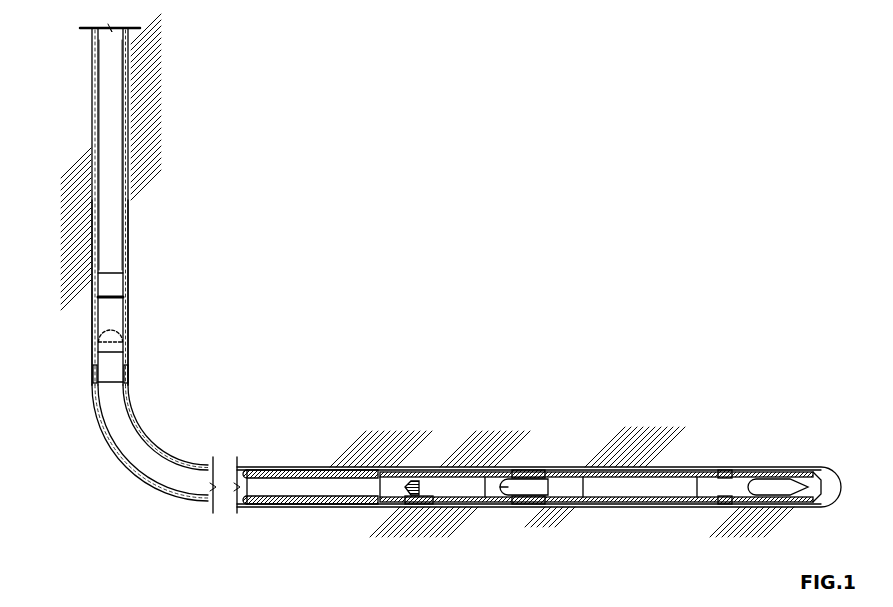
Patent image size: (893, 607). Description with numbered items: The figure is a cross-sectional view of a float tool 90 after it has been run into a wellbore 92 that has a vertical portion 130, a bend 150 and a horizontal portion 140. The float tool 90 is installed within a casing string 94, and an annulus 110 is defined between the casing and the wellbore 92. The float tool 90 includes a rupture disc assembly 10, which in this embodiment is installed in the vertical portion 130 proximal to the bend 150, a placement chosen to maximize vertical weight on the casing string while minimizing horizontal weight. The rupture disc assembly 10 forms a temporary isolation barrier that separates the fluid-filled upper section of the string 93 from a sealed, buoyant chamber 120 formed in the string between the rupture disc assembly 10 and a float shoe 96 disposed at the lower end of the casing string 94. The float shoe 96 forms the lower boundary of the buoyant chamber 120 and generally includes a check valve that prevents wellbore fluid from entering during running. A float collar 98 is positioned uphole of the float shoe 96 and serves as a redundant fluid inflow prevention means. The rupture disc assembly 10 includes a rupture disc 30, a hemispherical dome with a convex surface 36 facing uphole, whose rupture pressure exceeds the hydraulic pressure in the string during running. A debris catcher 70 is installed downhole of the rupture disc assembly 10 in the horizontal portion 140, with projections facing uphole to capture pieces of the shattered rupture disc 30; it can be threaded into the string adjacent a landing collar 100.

The rupture disc assembly 10 is at (143, 272).
The rupture disc 30 is at (99, 343).
The convex surface 36 is at (110, 324).
The debris catcher 70 is at (413, 478).
The float tool 90 is at (612, 126).
The wellbore 92 is at (130, 144).
The upper section of the string 93 is at (105, 97).
The casing string 94 is at (127, 192).
The float shoe 96 is at (757, 471).
The float collar 98 is at (521, 470).
The landing collar 100 is at (298, 468).
The annulus 110 is at (130, 205).
The buoyant chamber 120 is at (125, 428).
The vertical portion 130 is at (82, 168).
The horizontal portion 140 is at (511, 518).
The bend 150 is at (110, 487).